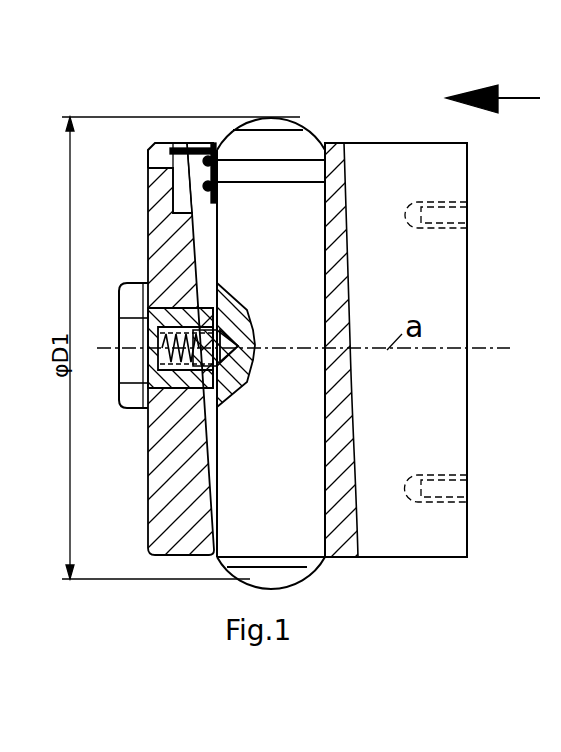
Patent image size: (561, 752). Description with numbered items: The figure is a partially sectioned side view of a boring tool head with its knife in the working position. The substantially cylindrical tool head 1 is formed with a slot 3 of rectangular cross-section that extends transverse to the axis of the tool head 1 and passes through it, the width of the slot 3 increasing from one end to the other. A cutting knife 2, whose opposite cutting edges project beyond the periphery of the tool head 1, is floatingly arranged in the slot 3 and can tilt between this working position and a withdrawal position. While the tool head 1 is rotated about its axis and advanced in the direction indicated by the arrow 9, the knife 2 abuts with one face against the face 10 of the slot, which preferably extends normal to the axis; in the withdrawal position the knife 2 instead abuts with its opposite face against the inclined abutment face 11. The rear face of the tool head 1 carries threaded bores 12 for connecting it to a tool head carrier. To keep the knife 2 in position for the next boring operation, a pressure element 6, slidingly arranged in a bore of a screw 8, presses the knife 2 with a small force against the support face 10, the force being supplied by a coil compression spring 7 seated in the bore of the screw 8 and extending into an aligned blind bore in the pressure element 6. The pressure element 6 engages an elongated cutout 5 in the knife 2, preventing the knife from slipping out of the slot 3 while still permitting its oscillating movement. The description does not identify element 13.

The tool head 1 is at (386, 168).
The cutting knife 2 is at (295, 178).
The slot 3 is at (193, 177).
The cutout 5 is at (215, 325).
The pressure element 6 is at (147, 439).
The coil compression spring 7 is at (128, 411).
The screw 8 is at (135, 350).
The arrow 9 is at (503, 98).
The face of the slot 10 is at (338, 304).
The abutment face 11 is at (182, 192).
The threaded bores 12 is at (452, 213).
The retaining ring 13 is at (204, 150).